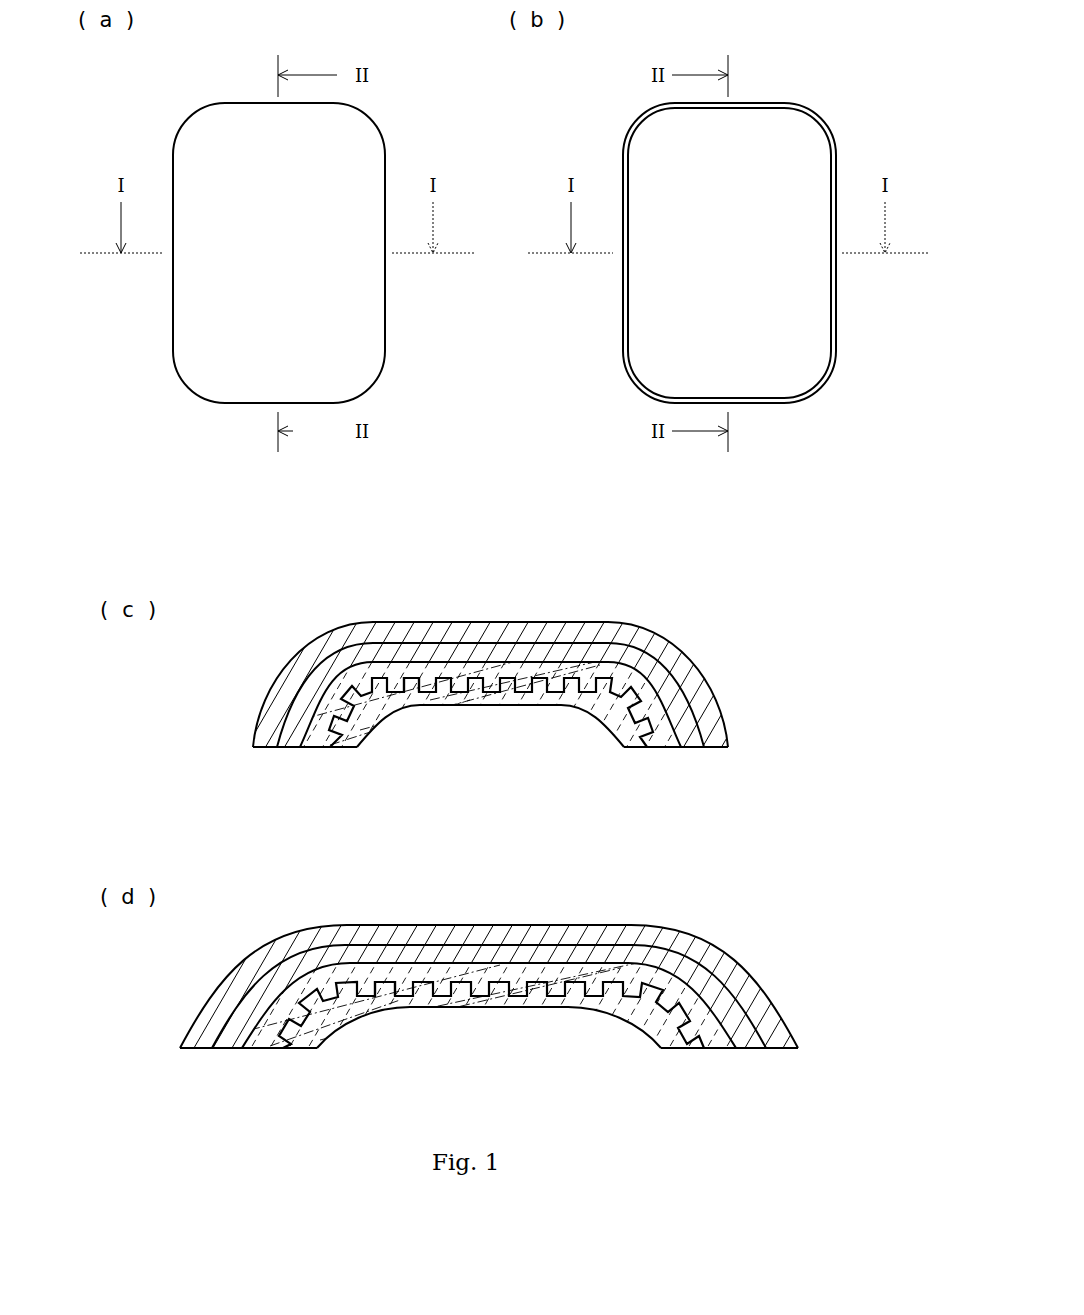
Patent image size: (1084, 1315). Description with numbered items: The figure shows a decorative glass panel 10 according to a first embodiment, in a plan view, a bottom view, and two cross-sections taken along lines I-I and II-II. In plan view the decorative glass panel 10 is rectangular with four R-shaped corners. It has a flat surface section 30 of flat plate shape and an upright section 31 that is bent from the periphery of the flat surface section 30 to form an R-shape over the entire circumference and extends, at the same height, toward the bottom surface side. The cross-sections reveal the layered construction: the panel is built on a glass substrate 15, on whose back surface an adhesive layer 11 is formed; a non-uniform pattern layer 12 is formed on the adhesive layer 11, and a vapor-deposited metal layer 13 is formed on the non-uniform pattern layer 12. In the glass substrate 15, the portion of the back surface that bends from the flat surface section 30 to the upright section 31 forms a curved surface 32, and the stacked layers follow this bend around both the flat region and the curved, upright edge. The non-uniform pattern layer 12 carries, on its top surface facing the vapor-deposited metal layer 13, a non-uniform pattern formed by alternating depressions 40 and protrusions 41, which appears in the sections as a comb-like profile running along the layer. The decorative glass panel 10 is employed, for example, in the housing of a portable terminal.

The decorative glass panel 10 is at (470, 548).
The adhesive layer 11 is at (752, 904).
The non-uniform pattern layer 12 is at (561, 879).
The vapor-deposited metal layer 13 is at (616, 595).
The glass substrate 15 is at (503, 680).
The flat surface section 30 is at (489, 662).
The upright section 31 is at (395, 713).
The curved surface 32 is at (489, 802).
The depressions 40 is at (491, 876).
The protrusions 41 is at (406, 878).